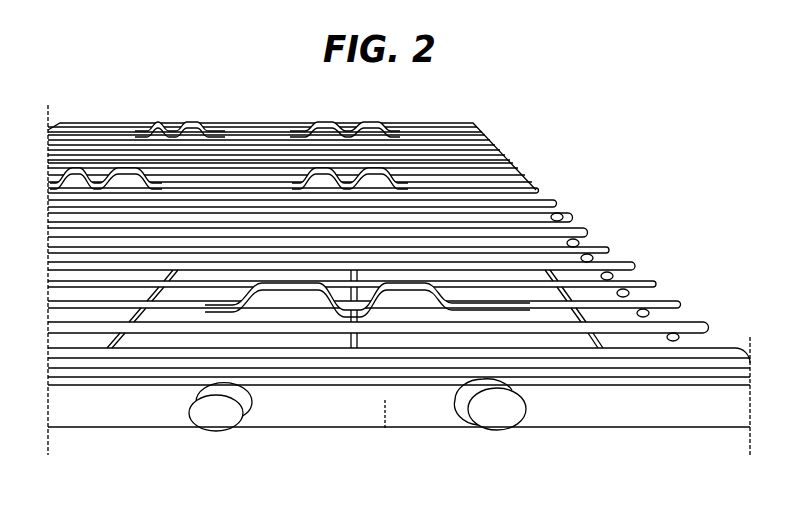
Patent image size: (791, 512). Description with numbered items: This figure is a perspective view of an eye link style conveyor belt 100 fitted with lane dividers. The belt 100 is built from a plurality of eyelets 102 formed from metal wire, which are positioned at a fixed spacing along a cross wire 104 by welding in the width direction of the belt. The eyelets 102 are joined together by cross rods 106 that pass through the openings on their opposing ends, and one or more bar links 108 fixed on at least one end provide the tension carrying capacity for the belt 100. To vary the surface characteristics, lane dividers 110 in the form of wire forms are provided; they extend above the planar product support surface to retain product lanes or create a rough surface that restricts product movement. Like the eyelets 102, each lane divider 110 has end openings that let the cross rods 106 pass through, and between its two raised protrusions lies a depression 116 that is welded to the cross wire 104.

The eye link style conveyor belt 100 is at (527, 110).
The eyelets 102 is at (540, 238).
The cross wire 104 is at (590, 342).
The cross rods 106 is at (390, 122).
The bar links 108 is at (386, 432).
The lane dividers 110 is at (270, 113).
The depression 116 is at (343, 308).